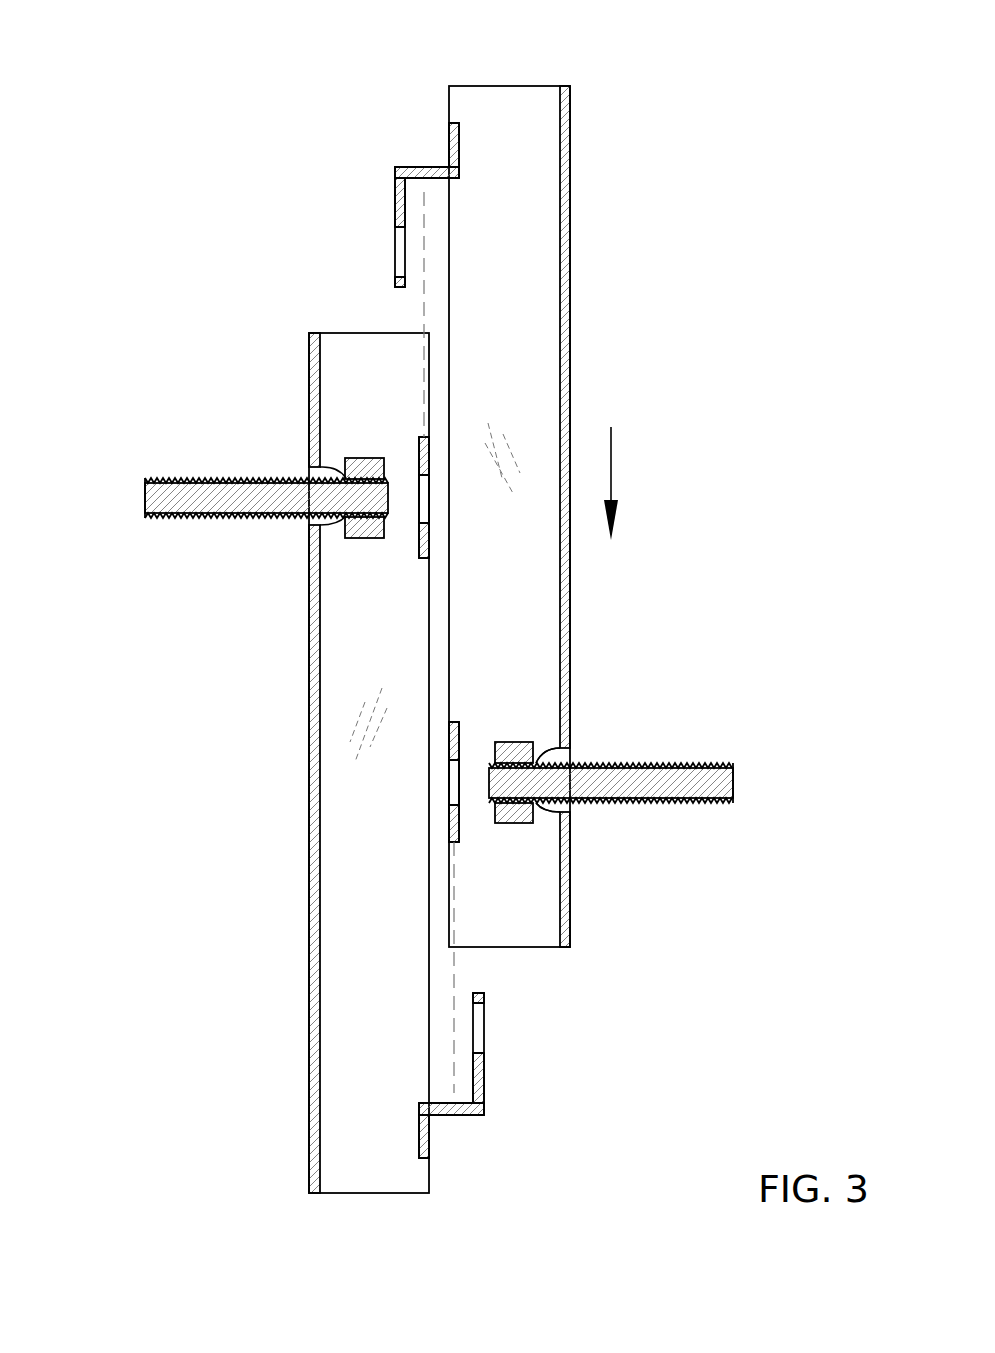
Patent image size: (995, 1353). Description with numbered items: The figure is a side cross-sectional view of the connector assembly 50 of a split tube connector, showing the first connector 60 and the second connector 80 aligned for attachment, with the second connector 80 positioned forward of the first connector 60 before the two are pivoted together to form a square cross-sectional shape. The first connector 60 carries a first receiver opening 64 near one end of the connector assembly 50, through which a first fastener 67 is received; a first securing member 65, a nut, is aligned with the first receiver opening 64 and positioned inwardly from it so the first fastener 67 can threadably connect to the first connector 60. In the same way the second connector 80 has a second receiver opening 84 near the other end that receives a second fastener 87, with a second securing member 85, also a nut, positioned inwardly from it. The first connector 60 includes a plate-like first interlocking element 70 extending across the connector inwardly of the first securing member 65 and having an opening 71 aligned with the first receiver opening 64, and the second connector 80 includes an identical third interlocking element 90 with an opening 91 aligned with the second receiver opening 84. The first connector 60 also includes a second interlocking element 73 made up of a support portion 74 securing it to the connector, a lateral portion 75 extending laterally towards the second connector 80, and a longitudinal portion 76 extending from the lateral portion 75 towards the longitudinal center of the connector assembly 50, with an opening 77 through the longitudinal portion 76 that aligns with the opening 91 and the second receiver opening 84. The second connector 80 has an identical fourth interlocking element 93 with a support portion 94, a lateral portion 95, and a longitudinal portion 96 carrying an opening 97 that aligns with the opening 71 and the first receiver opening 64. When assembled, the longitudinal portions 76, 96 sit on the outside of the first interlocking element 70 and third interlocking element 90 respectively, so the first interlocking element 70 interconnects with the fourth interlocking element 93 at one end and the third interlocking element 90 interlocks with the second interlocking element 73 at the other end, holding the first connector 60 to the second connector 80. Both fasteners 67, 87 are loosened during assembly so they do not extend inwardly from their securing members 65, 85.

The connector assembly 50 is at (148, 96).
The first connector 60 is at (308, 861).
The first receiver opening 64 is at (307, 523).
The first securing member 65 is at (345, 540).
The first fastener 67 is at (143, 497).
The first interlocking element 70 is at (420, 548).
The opening 71 is at (422, 480).
The second interlocking element 73 is at (496, 1116).
The support portion 74 is at (427, 1140).
The lateral portion 75 is at (450, 1115).
The longitudinal portion 76 is at (484, 1069).
The opening 77 is at (478, 1022).
The second connector 80 is at (570, 310).
The second receiver opening 84 is at (552, 757).
The second securing member 85 is at (538, 760).
The second fastener 87 is at (733, 782).
The third interlocking element 90 is at (460, 727).
The opening 91 is at (458, 800).
The fourth interlocking element 93 is at (380, 173).
The support portion 94 is at (450, 140).
The lateral portion 95 is at (422, 171).
The longitudinal portion 96 is at (396, 203).
The opening 97 is at (396, 255).